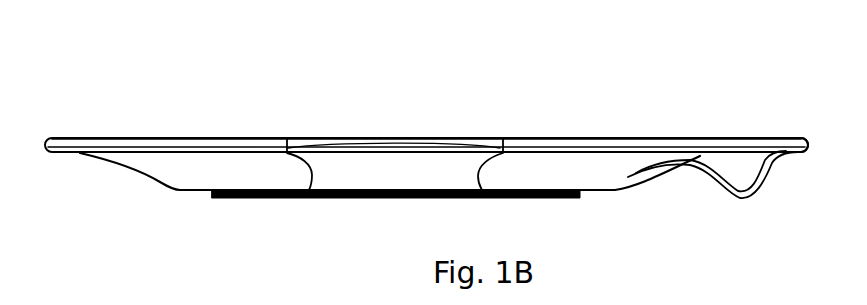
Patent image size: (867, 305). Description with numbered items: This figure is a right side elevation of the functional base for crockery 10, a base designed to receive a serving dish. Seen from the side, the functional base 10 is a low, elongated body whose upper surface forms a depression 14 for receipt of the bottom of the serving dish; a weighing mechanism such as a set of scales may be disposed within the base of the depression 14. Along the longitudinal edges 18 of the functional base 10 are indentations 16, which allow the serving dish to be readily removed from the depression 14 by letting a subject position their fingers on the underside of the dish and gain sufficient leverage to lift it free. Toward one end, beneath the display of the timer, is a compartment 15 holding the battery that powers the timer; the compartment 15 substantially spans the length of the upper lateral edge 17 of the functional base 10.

The functional base for crockery 10 is at (618, 113).
The depression 14 is at (203, 178).
The compartment 15 is at (733, 170).
The indentations 16 is at (385, 148).
The upper lateral edge 17 is at (806, 154).
The longitudinal edges 18 is at (250, 138).